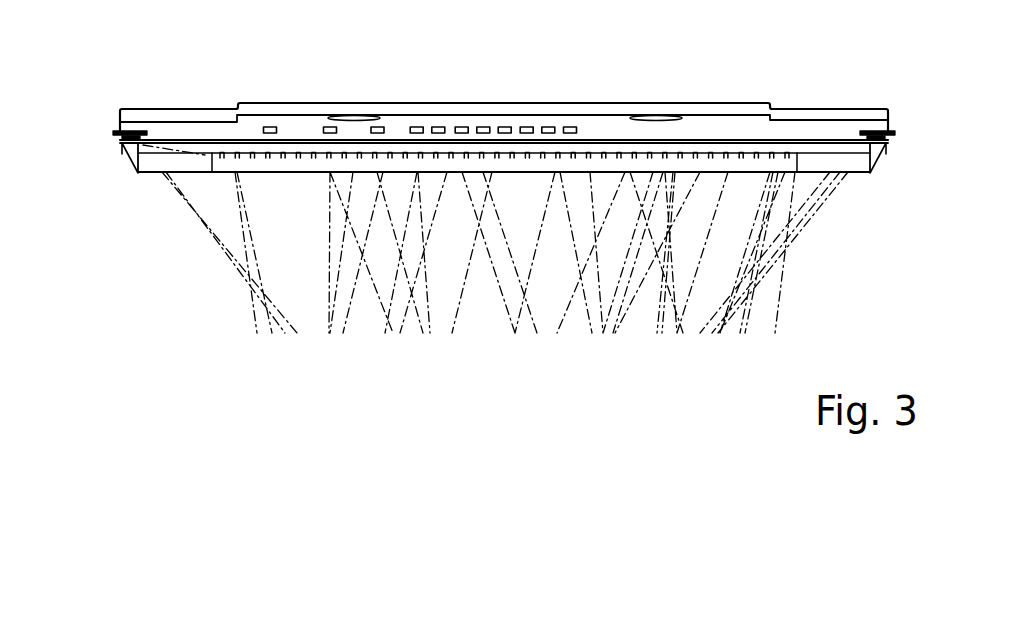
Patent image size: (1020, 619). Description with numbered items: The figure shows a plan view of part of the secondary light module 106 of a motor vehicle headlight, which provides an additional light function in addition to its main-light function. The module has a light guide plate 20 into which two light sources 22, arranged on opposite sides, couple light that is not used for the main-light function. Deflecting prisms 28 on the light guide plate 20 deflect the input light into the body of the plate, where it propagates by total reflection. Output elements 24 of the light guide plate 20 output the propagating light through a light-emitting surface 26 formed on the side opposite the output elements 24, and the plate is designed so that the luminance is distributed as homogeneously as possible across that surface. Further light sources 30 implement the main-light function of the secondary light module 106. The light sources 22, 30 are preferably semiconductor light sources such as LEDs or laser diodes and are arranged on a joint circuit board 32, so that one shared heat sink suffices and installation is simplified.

The secondary light module 106 is at (603, 77).
The light guide plate 20 is at (822, 165).
The light source 22 is at (113, 133).
The output elements 24 is at (663, 152).
The light-emitting surface 26 is at (797, 237).
The deflecting prisms 28 is at (122, 148).
The further light sources 30 is at (271, 126).
The joint circuit board 32 is at (348, 113).